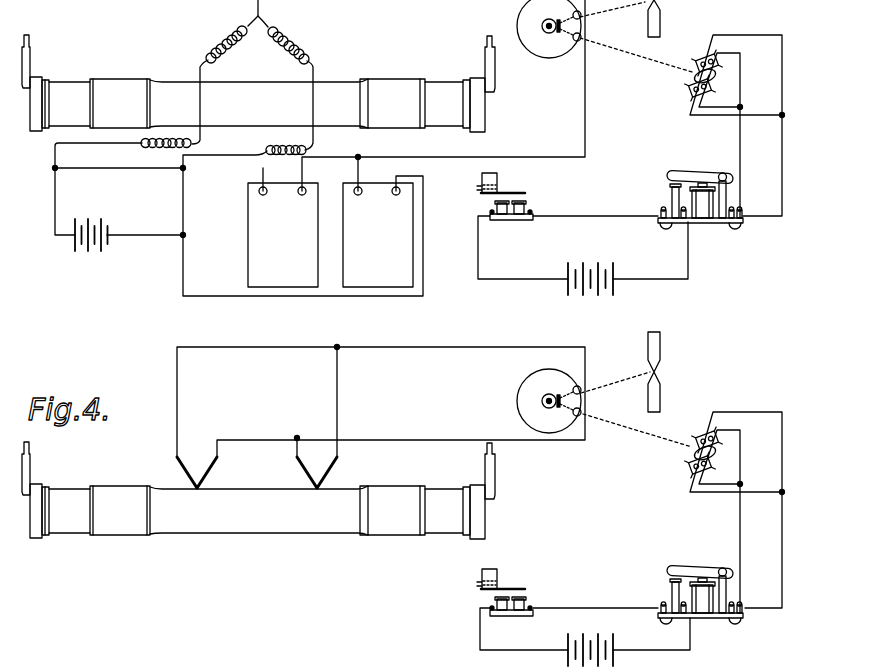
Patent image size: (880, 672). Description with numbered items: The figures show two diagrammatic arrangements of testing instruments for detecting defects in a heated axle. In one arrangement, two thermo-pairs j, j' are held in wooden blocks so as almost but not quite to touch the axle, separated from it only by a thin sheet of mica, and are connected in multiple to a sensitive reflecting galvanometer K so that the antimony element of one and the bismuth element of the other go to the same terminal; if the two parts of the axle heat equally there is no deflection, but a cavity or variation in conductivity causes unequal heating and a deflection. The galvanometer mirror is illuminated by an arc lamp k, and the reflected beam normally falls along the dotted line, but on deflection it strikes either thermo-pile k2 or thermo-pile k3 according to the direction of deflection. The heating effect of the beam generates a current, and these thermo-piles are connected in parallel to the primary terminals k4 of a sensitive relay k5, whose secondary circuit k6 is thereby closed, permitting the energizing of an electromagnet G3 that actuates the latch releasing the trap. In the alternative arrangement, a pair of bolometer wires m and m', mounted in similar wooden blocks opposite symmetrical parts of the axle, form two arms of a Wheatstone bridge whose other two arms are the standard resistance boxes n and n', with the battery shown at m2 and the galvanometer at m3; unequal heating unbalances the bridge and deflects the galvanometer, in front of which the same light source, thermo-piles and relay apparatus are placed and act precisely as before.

In FIG. 5, the bolometer wire m is at (194, 87).
In FIG. 5, the bolometer wire m' is at (300, 91).
In FIG. 5, the battery m2 is at (91, 242).
In FIG. 5, the galvanometer m3 is at (549, 37).
In FIG. 5, the standard resistance box n is at (283, 235).
In FIG. 5, the standard resistance box n' is at (378, 235).
In FIG. 4, the lamp k is at (657, 352).
In FIG. 4, the reflecting galvanometer K is at (533, 383).
In FIG. 5, the thermo-pile k2 is at (703, 50).
In FIG. 4, the thermo-pile k2 is at (704, 427).
In FIG. 5, the thermo-pile k3 is at (694, 86).
In FIG. 4, the thermo-pile k3 is at (692, 470).
In FIG. 5, the primary terminals k4 is at (740, 225).
In FIG. 4, the primary terminals k4 is at (738, 620).
In FIG. 5, the sensitive relay k5 is at (702, 224).
In FIG. 4, the sensitive relay k5 is at (698, 620).
In FIG. 5, the secondary circuit k6 is at (595, 210).
In FIG. 4, the secondary circuit k6 is at (595, 599).
In FIG. 5, the electromagnet G3 is at (528, 214).
In FIG. 4, the electromagnet G3 is at (526, 598).
In FIG. 4, the thermo-pair j is at (201, 472).
In FIG. 4, the thermo-pair j' is at (322, 472).